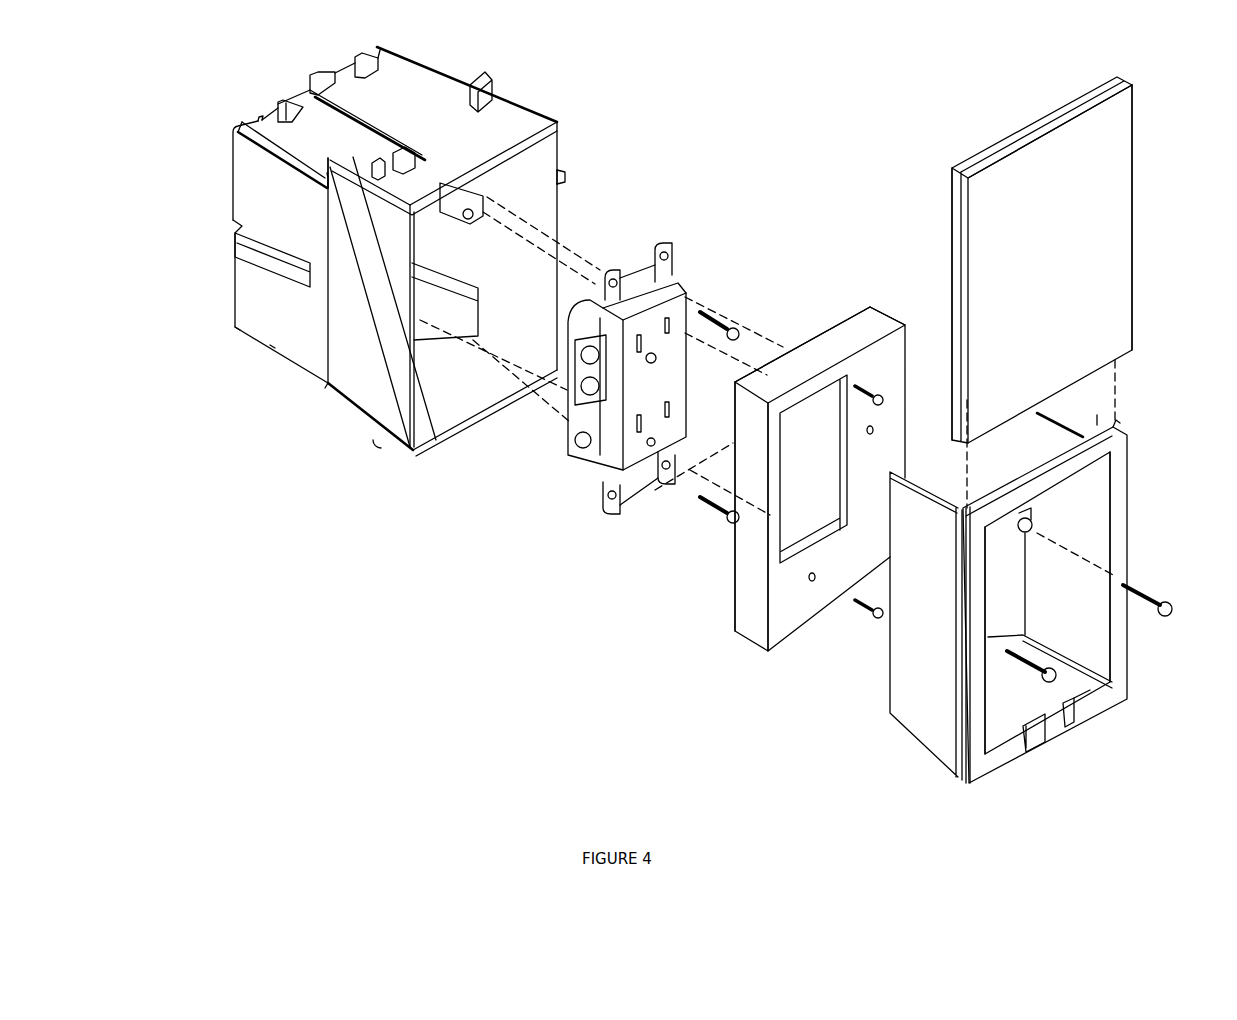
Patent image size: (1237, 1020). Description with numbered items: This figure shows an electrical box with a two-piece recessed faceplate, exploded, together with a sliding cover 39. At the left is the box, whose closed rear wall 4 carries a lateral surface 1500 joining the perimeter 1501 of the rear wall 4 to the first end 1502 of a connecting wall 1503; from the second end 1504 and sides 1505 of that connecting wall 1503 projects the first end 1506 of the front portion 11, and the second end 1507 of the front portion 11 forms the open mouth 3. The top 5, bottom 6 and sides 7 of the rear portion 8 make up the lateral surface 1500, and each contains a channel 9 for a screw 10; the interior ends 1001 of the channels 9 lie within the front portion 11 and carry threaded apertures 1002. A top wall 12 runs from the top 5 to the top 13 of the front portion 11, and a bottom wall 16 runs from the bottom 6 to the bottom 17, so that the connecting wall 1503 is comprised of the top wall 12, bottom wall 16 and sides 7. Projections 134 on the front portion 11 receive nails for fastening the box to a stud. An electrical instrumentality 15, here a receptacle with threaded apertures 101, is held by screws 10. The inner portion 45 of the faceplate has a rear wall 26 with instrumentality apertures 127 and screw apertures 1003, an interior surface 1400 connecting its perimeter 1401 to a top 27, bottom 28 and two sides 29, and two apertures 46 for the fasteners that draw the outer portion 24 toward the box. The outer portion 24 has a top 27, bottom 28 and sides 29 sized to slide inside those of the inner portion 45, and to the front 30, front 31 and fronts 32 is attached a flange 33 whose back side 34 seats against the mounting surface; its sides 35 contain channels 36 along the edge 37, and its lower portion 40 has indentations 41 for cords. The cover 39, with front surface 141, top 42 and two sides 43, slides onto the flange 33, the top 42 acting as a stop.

The mouth 3 is at (550, 167).
The rear wall 4 is at (290, 98).
The top 5 is at (290, 107).
The bottom 6 is at (293, 348).
The sides 7 is at (245, 263).
The rear portion 8 is at (265, 332).
The channel 9 is at (303, 90).
The screw 10 is at (710, 311).
The front portion 11 is at (500, 107).
The top wall 12 is at (327, 173).
The top of the front portion 13 is at (520, 118).
The electrical instrumentality 15 is at (603, 455).
The bottom wall 16 is at (325, 390).
The bottom of the front portion 17 is at (362, 427).
The outer portion 24 is at (887, 760).
The rear wall 26 is at (780, 573).
The top 27 is at (803, 353).
The bottom 28 is at (782, 622).
The sides 29 is at (892, 343).
The front of the top 30 is at (1082, 478).
The front of the bottom 31 is at (995, 737).
The front of the sides 32 is at (935, 641).
The flange 33 is at (937, 678).
The back side 34 is at (1097, 426).
The sides 35 is at (1131, 446).
The channel 36 is at (1116, 424).
The edge 37 is at (1128, 572).
The cover 39 is at (1150, 188).
The lower portion 40 is at (1088, 705).
The indentation 41 is at (1069, 723).
The top 42 is at (1042, 122).
The sides 43 is at (957, 232).
The inner portion 45 is at (663, 678).
The aperture 46 is at (906, 404).
The threaded aperture 101 is at (638, 258).
The instrumentality aperture 127 is at (792, 537).
The projections 134 is at (473, 78).
The front surface 141 is at (1108, 250).
The interior end 1001 is at (557, 222).
The threaded aperture 1002 is at (470, 219).
The aperture 1003 is at (813, 582).
The interior surface 1400 is at (828, 340).
The perimeter 1401 is at (877, 358).
The lateral surface 1500 is at (247, 323).
The perimeter 1501 is at (335, 77).
The first end 1502 is at (327, 187).
The connecting wall 1503 is at (327, 176).
The second end 1504 is at (357, 140).
The sides 1505 is at (327, 182).
The first end 1506 is at (342, 397).
The second end 1507 is at (557, 120).